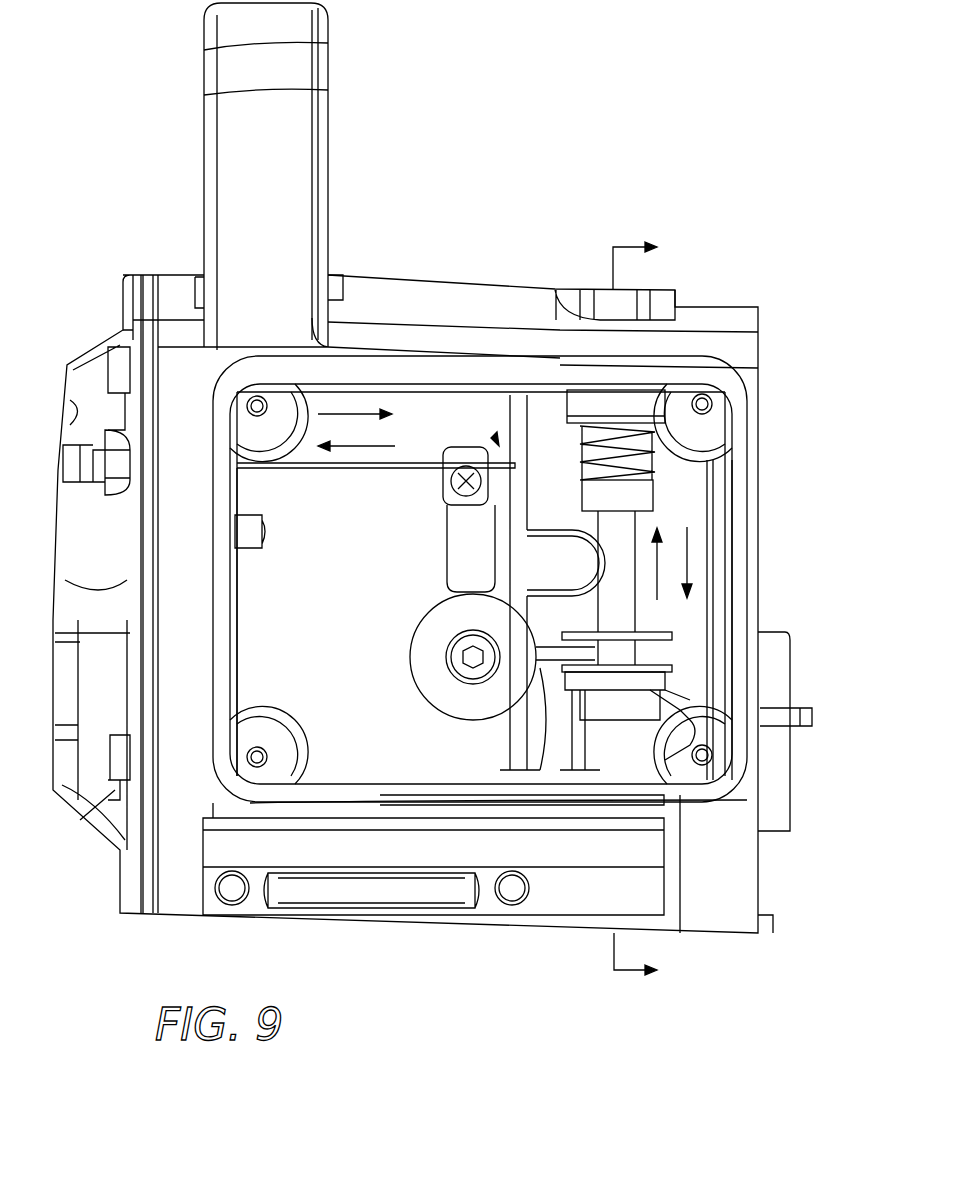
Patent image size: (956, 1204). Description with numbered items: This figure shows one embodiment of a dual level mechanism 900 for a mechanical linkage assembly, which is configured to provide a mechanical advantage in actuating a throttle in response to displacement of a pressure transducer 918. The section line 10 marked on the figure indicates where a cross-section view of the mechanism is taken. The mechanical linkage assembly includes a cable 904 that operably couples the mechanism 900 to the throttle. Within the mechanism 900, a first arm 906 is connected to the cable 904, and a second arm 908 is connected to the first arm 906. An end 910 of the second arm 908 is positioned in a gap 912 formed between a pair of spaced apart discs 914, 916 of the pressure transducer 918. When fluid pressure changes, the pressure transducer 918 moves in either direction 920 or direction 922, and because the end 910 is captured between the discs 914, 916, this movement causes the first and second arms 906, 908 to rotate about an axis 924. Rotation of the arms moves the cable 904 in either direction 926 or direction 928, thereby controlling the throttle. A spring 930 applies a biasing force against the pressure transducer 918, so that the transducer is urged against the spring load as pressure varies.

The section line 10- 10 is at (653, 609).
The dual level mechanism 900 is at (496, 440).
The cable 904 is at (348, 465).
The first arm 906 is at (465, 540).
The second arm 908 is at (552, 655).
The end of second arm 910 is at (590, 660).
The gap 912 is at (633, 652).
The disc 914 is at (660, 578).
The disc 916 is at (657, 668).
The pressure transducer 918 is at (630, 498).
The direction 920 is at (672, 635).
The direction 922 is at (688, 570).
The axis 924 is at (468, 655).
The direction 926 is at (410, 444).
The direction 928 is at (372, 412).
The spring 930 is at (600, 468).